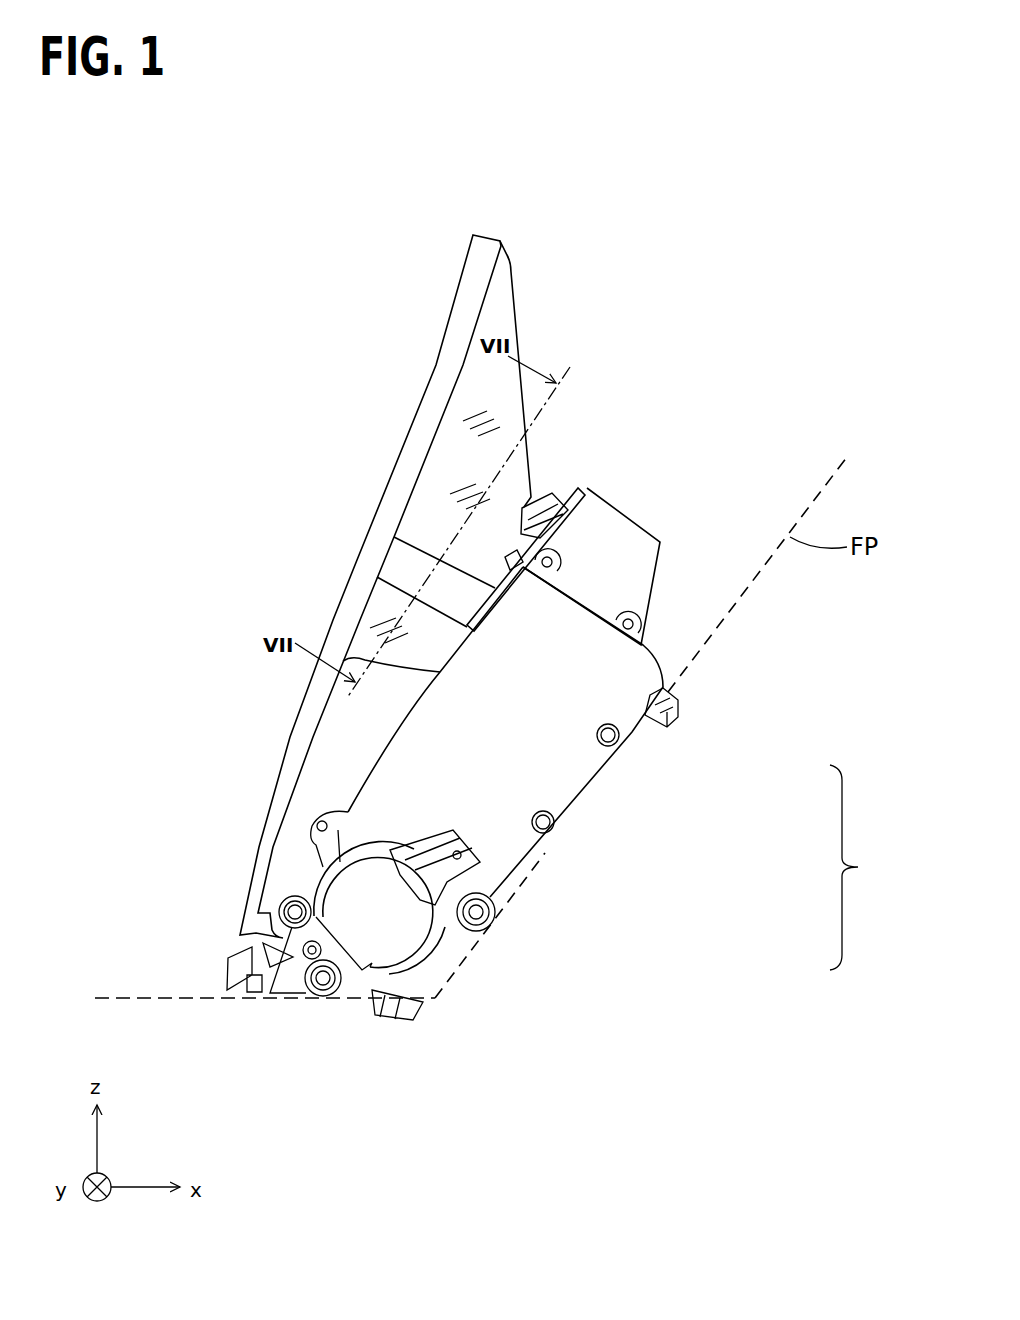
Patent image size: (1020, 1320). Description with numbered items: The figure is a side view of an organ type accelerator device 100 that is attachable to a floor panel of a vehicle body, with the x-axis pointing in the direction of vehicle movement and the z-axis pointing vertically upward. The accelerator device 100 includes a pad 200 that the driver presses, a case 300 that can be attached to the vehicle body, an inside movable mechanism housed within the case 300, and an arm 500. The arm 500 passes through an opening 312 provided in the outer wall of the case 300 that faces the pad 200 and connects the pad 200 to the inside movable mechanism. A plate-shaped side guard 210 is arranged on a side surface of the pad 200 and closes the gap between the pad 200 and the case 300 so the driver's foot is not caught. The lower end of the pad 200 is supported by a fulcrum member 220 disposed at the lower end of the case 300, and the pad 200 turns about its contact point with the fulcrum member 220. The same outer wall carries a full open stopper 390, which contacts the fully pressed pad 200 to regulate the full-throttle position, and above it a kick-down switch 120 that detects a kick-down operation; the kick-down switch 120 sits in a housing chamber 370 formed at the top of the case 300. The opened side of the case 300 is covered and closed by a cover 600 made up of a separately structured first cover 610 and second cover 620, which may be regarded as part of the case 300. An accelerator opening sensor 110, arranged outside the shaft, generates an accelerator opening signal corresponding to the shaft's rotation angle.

The accelerator device 100 is at (750, 367).
The accelerator opening sensor 110 is at (348, 937).
The kick-down switch 120 is at (557, 487).
The pad 200 is at (457, 340).
The side guard 210 is at (500, 297).
The fulcrum member 220 is at (258, 952).
The case 300 is at (568, 661).
The opening 312 is at (495, 585).
The housing chamber 370 is at (617, 533).
The full open stopper 390 is at (510, 553).
The arm 500 is at (402, 567).
The cover 600 is at (867, 867).
The first cover 610 is at (487, 945).
The second cover 620 is at (562, 777).